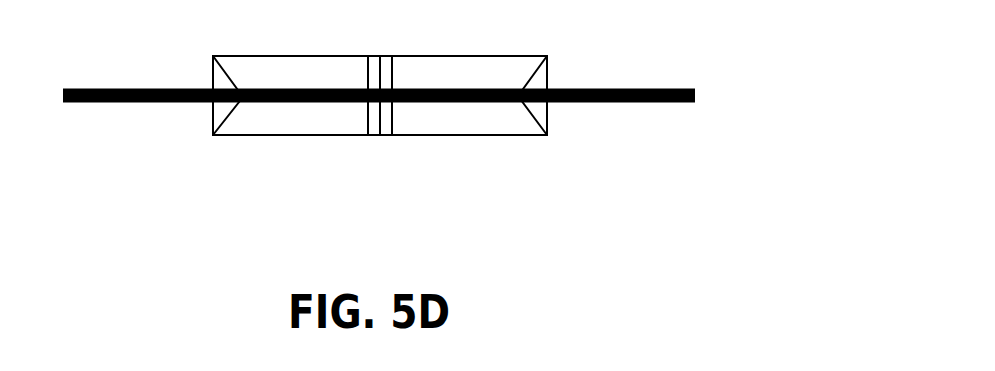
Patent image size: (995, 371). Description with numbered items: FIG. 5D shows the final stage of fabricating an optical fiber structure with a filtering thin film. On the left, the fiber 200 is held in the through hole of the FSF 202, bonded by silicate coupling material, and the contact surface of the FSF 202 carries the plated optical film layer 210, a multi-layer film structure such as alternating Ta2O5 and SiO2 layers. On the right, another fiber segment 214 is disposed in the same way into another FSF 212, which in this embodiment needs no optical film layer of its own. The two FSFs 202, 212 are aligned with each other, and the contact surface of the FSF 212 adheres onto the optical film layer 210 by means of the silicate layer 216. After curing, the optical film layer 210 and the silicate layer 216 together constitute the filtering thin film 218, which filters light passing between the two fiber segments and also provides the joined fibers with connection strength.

The fiber 200 is at (143, 88).
The FSF 202 is at (262, 120).
The optical film layer 210 is at (372, 136).
The FSF 212 is at (509, 120).
The fiber segment 214 is at (643, 88).
The silicate layer 216 is at (388, 136).
The filtering thin film 218 is at (432, 208).